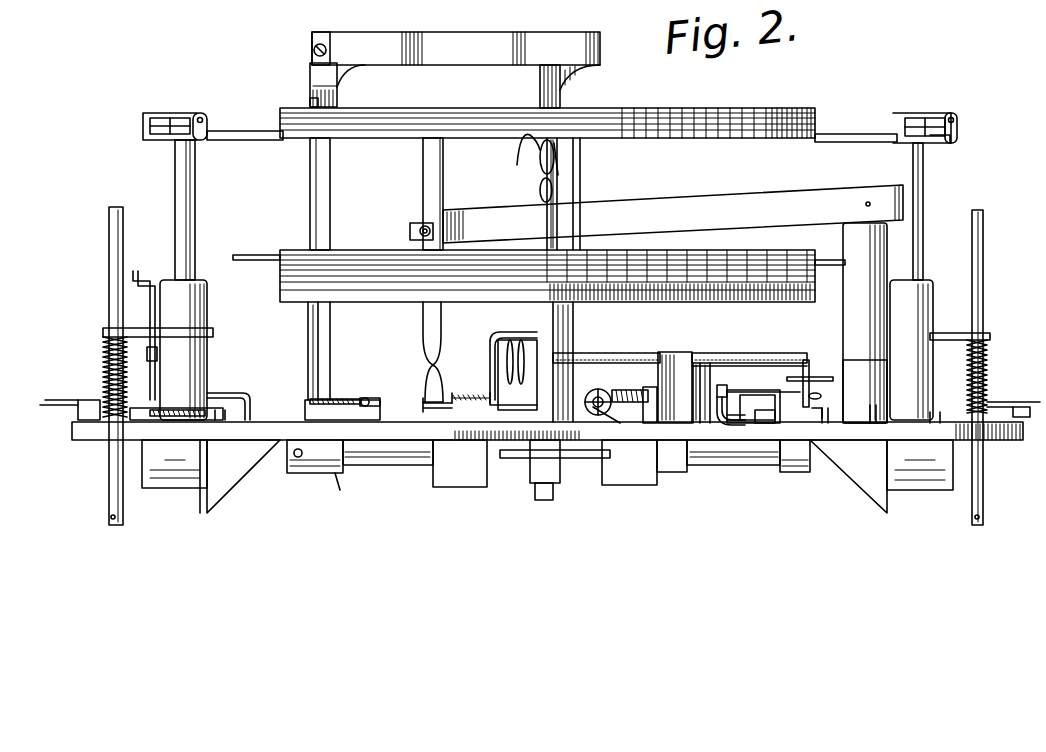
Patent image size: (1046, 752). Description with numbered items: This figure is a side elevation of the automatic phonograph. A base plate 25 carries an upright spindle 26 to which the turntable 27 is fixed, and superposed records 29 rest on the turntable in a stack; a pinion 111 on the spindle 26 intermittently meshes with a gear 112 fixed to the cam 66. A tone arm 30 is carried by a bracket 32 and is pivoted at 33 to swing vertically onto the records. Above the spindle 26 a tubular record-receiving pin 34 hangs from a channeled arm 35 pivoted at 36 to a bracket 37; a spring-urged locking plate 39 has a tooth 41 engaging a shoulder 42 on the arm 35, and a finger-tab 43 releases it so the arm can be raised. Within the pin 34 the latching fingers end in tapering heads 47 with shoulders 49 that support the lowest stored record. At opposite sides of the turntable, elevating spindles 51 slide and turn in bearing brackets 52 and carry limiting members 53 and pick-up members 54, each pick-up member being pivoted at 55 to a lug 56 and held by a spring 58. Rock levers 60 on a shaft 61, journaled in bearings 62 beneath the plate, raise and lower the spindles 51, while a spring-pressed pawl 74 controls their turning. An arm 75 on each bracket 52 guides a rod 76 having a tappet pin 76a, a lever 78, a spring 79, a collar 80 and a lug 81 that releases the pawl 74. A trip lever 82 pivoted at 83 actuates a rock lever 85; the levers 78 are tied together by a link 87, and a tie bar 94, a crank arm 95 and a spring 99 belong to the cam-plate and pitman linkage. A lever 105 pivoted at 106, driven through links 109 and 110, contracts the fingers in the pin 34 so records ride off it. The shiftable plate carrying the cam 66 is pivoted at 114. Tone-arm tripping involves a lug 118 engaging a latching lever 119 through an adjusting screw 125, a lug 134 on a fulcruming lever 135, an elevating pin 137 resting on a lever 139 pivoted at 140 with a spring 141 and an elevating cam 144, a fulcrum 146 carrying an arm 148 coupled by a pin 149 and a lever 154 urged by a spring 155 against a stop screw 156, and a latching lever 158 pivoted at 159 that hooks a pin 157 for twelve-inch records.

The base plate 25 is at (90, 430).
The upright spindle 26 is at (553, 190).
The turntable 27 is at (393, 300).
The records 29 is at (280, 268).
The tone arm 30 is at (673, 214).
The bracket 32 is at (843, 312).
The pivot 33 is at (866, 205).
The record-receiving pin 34 is at (540, 80).
The vertically-swinging arm 35 is at (456, 48).
The pivot 36 is at (335, 48).
The bracket 37 is at (347, 194).
The locking plate 39 is at (337, 95).
The tooth 41 is at (165, 420).
The shoulder 42 is at (220, 420).
The finger-tab 43 is at (310, 98).
The tapering heads 47 is at (558, 150).
The horizontal shoulders 49 is at (516, 157).
The elevating spindles 51 is at (195, 208).
The bearing brackets 52 is at (207, 355).
The spindle-limiting and clutching members 53 is at (238, 133).
The record pick-up members 54 is at (260, 142).
The pivot 55 is at (172, 118).
The upstanding lugs 56 is at (143, 128).
The spring 58 is at (940, 143).
The rock levers 60 is at (547, 476).
The horizontal shaft 61 is at (405, 465).
The bearings 62 is at (310, 473).
The cam 66 is at (636, 345).
The pawl 74 is at (935, 423).
The arm 75 is at (110, 328).
The rod 76 is at (108, 255).
The tappet pin 76a is at (113, 520).
The horizontally-swinging lever 78 is at (78, 412).
The spring 79 is at (103, 370).
The collar 80 is at (103, 333).
The lug 81 is at (1030, 412).
The trip lever 82 is at (140, 280).
The pivot 83 is at (170, 370).
The rock lever 85 is at (245, 395).
The link 87 is at (75, 392).
The tie bar 94 is at (335, 399).
The crank arm 95 is at (349, 491).
The spring 99 is at (370, 398).
The lever 105 is at (443, 158).
The pivot 106 is at (410, 232).
The link 109 is at (433, 352).
The yieldable link 110 is at (478, 385).
The pinion 111 is at (510, 340).
The gear 112 is at (738, 353).
The pivot 114 is at (800, 378).
The depending lug 118 is at (855, 362).
The latching lever 119 is at (746, 395).
The adjusting screw 125 is at (831, 405).
The lug 134 is at (758, 381).
The fulcruming lever 135 is at (753, 406).
The elevating pin 137 is at (887, 390).
The lever 139 is at (735, 422).
The pivot 140 is at (770, 423).
The spring 141 is at (826, 423).
The elevating cam 144 is at (873, 423).
The fulcrum 146 is at (675, 352).
The arm 148 is at (705, 353).
The pin 149 is at (803, 365).
The lever 154 is at (633, 385).
The spring 155 is at (600, 385).
The adjustable stop screw 156 is at (650, 423).
The pin 157 is at (601, 425).
The latching lever 158 is at (428, 406).
The pivot 159 is at (490, 362).